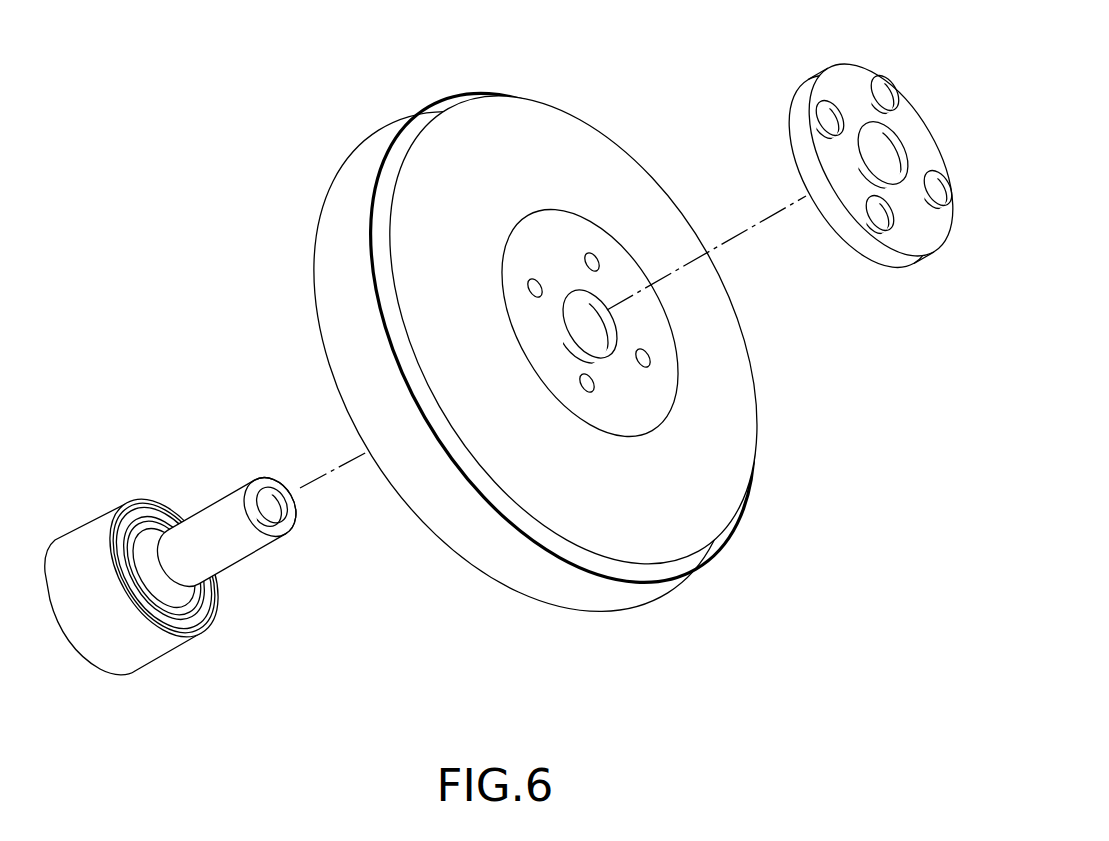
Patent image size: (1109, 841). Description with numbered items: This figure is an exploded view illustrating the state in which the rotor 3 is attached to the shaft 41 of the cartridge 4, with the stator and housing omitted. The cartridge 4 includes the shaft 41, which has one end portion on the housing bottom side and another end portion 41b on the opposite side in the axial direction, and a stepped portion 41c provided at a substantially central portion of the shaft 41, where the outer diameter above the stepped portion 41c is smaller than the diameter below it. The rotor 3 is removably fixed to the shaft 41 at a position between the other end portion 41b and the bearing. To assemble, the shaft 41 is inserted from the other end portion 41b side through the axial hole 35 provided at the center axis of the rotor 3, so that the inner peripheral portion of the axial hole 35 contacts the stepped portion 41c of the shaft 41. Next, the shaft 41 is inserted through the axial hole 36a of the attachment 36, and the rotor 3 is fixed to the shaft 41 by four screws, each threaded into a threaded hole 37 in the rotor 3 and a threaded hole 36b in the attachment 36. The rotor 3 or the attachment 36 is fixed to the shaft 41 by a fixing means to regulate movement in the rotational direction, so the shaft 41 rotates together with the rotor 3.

The rotor 3 is at (531, 357).
The cartridge 4 is at (212, 535).
The axial hole 35 is at (615, 331).
The attachment 36 is at (871, 169).
The axial hole 36a is at (889, 152).
The threaded hole 36b is at (887, 88).
The threaded hole 37 is at (593, 255).
The shaft 41 is at (226, 552).
The other end portion 41b is at (268, 478).
The stepped portion 41c is at (163, 517).